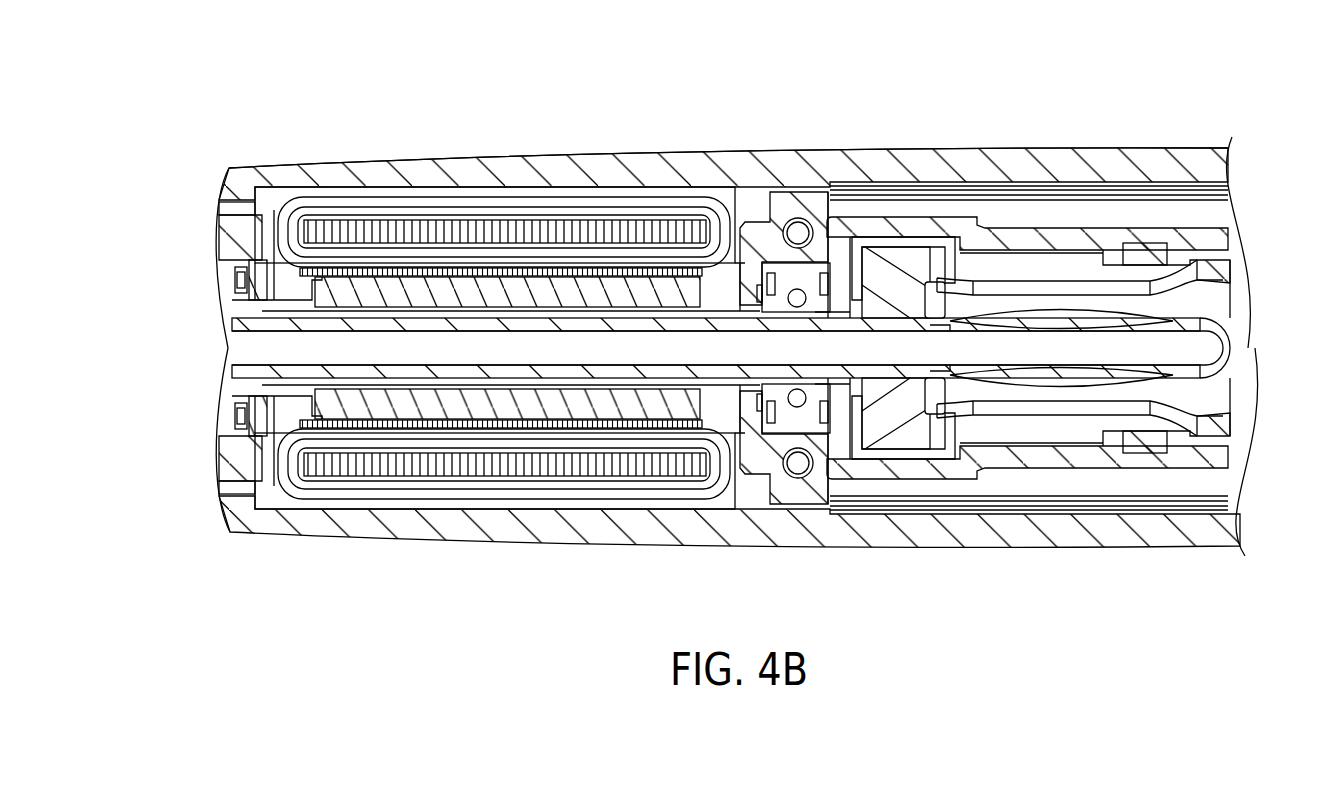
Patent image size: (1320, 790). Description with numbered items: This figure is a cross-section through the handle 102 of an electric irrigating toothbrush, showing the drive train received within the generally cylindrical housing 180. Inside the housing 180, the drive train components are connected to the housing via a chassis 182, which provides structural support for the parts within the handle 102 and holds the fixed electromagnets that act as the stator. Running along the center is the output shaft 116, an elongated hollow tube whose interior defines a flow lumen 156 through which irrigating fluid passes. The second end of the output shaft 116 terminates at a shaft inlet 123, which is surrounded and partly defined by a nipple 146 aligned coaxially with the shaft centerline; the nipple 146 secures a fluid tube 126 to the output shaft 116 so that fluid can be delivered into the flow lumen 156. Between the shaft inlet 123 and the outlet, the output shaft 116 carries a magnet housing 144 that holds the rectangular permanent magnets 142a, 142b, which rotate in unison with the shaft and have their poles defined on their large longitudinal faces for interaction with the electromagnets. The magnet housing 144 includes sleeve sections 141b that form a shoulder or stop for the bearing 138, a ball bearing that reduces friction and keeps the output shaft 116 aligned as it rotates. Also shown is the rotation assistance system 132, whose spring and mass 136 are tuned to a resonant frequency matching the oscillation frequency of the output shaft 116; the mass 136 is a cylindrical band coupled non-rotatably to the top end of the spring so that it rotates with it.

The handle 102 is at (552, 150).
The output shaft 116 is at (243, 373).
The shaft inlet 123 is at (993, 332).
The fluid tube 126 is at (1055, 373).
The rotation assistance system 132 is at (1080, 285).
The mass 136 is at (897, 455).
The bearing 138 is at (800, 268).
The sleeve section 141b is at (823, 313).
The permanent magnet 142a is at (477, 415).
The permanent magnet 142b is at (365, 290).
The magnet housing 144 is at (300, 410).
The nipple 146 is at (973, 363).
The flow lumen 156 is at (250, 346).
The housing 180 is at (700, 170).
The chassis 182 is at (915, 226).